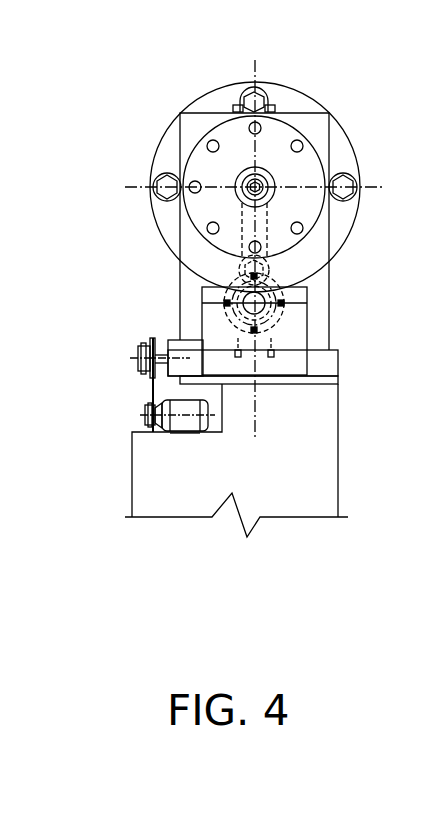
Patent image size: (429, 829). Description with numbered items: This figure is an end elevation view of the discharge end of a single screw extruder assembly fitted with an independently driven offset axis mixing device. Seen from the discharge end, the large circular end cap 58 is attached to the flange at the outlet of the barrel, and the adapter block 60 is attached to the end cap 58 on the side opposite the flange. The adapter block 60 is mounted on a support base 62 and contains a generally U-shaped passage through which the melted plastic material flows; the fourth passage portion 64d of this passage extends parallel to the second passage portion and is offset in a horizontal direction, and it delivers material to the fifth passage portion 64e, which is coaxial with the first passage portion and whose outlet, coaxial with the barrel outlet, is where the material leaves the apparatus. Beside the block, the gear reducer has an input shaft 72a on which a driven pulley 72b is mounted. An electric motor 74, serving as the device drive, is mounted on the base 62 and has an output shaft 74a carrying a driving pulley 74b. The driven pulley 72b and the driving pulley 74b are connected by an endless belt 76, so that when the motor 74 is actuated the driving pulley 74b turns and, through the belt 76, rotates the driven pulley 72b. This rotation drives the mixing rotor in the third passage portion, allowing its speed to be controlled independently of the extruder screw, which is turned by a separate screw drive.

The end cap 58 is at (223, 95).
The adapter block 60 is at (308, 123).
The support base 62 is at (250, 479).
The fourth passage portion 64d is at (262, 223).
The fifth passage portion 64e is at (275, 190).
The input shaft 72a is at (138, 360).
The driven pulley 72b is at (152, 337).
The electric motor 74 is at (187, 420).
The output shaft 74a is at (147, 415).
The driving pulley 74b is at (152, 425).
The endless belt 76 is at (148, 388).